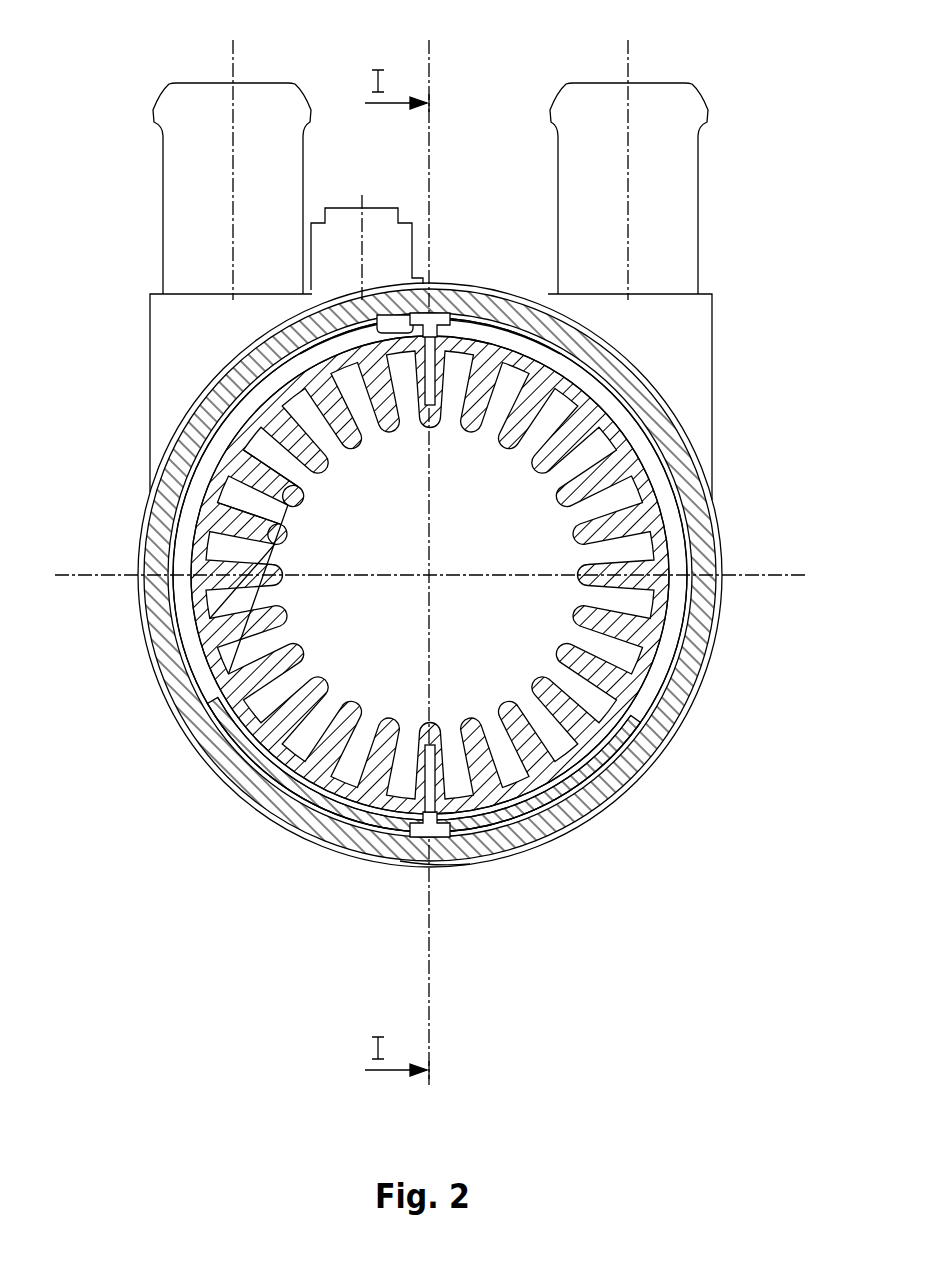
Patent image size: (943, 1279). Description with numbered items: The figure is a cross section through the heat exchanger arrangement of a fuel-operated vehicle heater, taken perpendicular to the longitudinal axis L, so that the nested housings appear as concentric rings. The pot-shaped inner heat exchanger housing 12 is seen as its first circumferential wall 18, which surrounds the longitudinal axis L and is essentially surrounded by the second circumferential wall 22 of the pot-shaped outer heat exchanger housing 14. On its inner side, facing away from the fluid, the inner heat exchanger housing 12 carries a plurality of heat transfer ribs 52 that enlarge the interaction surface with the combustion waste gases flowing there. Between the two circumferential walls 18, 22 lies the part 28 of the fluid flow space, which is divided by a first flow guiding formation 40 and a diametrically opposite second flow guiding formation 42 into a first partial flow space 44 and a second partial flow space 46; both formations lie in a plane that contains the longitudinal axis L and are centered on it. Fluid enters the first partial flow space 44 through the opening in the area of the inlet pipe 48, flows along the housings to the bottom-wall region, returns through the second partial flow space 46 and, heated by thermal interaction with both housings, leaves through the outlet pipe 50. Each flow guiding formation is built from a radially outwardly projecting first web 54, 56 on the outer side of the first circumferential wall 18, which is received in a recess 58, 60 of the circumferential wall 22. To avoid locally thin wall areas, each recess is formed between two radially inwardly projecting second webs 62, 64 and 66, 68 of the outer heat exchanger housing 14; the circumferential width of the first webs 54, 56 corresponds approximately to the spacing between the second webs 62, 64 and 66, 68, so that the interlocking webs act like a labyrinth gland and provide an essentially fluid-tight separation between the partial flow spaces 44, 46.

The inner heat exchanger housing 12 is at (548, 790).
The outer heat exchanger housing 14 is at (275, 830).
The first circumferential wall 18 is at (625, 725).
The second circumferential wall 22 is at (690, 488).
The part of the fluid flow space between the circumferential walls 28 is at (690, 625).
The first flow guiding formation 40 is at (447, 308).
The second flow guiding formation 42 is at (443, 850).
The first partial flow space 44 is at (575, 395).
The second partial flow space 46 is at (178, 630).
The inlet pipe 48 is at (698, 232).
The outlet pipe 50 is at (150, 310).
The heat transfer ribs 52 is at (240, 525).
The first web 54 is at (447, 322).
The first web 56 is at (410, 830).
The recess 58 is at (432, 318).
The recess 60 is at (455, 860).
The second web 62 is at (408, 325).
The second web 64 is at (450, 325).
The second web 66 is at (232, 780).
The second web 68 is at (505, 857).
The longitudinal axis L is at (430, 575).